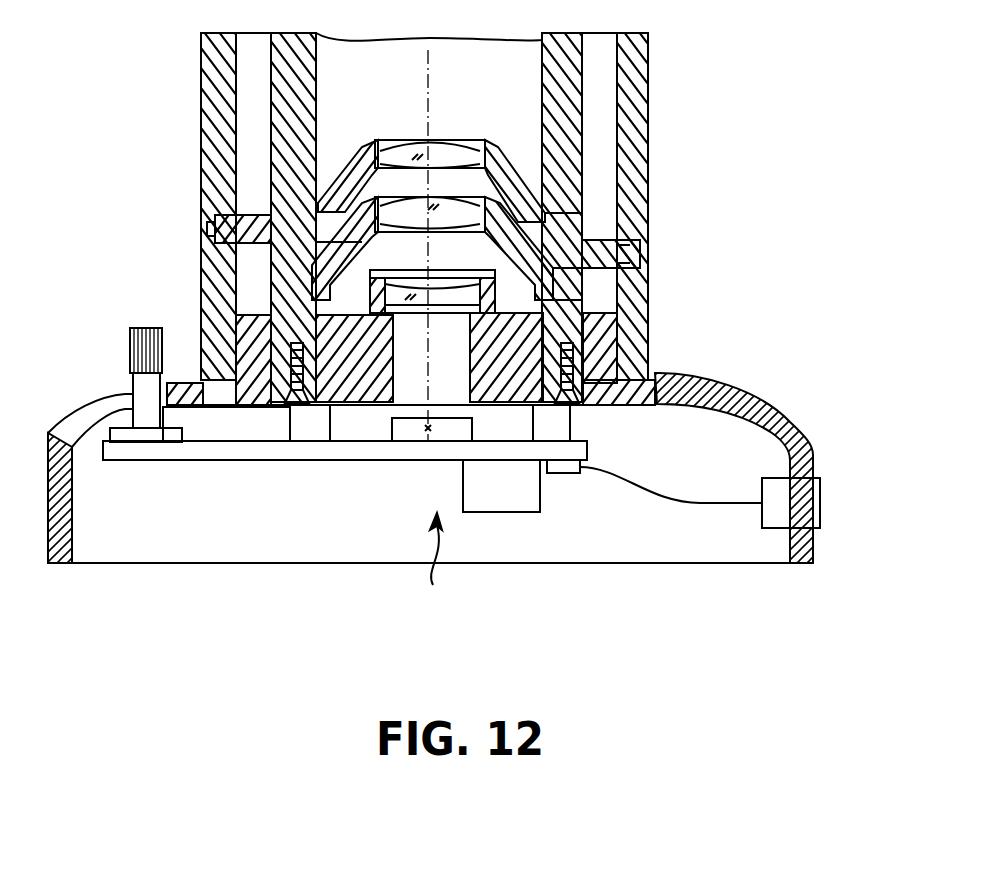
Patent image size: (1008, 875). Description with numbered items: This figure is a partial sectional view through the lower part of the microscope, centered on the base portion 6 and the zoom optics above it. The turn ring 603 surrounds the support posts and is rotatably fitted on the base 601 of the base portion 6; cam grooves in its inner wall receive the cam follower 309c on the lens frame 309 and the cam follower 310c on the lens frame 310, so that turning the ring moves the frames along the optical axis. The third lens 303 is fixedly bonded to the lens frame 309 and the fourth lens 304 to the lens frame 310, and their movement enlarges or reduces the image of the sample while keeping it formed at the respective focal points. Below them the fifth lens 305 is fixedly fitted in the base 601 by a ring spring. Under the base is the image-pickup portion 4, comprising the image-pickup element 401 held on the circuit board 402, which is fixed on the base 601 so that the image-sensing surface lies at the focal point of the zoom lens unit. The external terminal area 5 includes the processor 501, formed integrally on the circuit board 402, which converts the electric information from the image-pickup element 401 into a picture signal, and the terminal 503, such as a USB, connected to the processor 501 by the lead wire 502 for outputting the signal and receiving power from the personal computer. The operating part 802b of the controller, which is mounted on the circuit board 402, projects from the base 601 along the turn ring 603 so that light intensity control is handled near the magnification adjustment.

The image-pickup portion 4 is at (437, 567).
The external terminal area 5 is at (468, 480).
The base portion 6 is at (471, 236).
The third lens 303 is at (452, 155).
The fourth lens 304 is at (403, 203).
The fifth lens 305 is at (460, 297).
The lens frame 309 is at (505, 190).
The cam follower 309c is at (213, 210).
The lens frame 310 is at (527, 242).
The cam follower 310c is at (640, 258).
The image-pickup element 401 is at (405, 432).
The circuit board 402 is at (283, 460).
The processor 501 is at (543, 497).
The lead wire 502 is at (697, 503).
The terminal 503 is at (805, 505).
The base 601 is at (795, 413).
The turn ring 603 is at (202, 133).
The operating part 802b is at (143, 325).